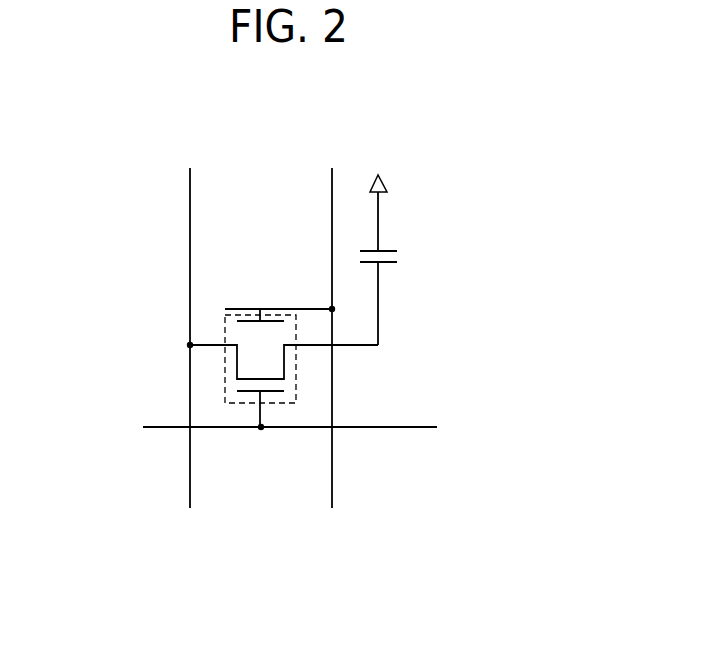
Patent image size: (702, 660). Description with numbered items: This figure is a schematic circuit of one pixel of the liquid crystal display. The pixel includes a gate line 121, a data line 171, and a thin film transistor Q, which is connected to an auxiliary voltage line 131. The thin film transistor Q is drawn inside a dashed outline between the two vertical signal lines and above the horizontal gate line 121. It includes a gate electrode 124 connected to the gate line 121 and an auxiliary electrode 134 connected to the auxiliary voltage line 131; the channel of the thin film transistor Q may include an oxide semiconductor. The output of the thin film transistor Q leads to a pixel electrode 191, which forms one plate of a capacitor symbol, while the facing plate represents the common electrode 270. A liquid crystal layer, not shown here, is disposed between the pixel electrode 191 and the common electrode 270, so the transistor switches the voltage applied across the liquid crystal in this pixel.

The data line 171 is at (190, 212).
The auxiliary voltage line 131 is at (332, 191).
The gate line 121 is at (403, 429).
The auxiliary electrode 134 is at (247, 320).
The gate electrode 124 is at (248, 393).
The thin film transistor Q is at (296, 373).
The pixel electrode 191 is at (392, 265).
The common electrode 270 is at (393, 249).